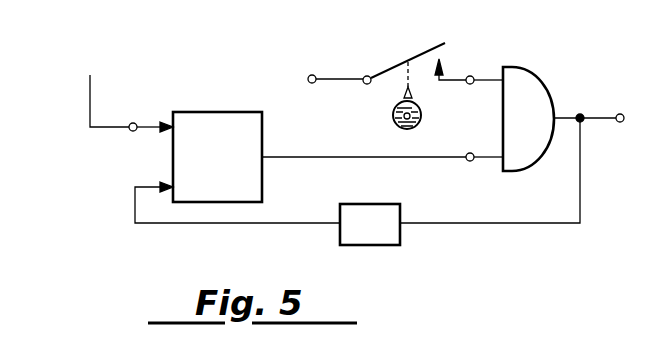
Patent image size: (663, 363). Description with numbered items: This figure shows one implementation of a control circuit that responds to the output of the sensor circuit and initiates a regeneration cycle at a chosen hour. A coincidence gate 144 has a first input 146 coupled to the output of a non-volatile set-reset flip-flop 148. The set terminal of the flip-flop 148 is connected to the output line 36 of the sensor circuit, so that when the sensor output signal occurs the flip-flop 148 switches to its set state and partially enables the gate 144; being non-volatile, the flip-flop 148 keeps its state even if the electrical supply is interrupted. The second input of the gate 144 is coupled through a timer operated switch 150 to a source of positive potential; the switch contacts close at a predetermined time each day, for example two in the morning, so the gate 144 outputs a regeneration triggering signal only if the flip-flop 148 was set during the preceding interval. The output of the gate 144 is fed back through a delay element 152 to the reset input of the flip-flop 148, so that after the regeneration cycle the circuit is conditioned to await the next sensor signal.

The output line 36 is at (90, 85).
The coincidence gate 144 is at (535, 78).
The first input 146 is at (470, 162).
The non-volatile set-reset flip-flop 148 is at (218, 111).
The timer operated switch 150 is at (393, 66).
The delay element 152 is at (378, 245).